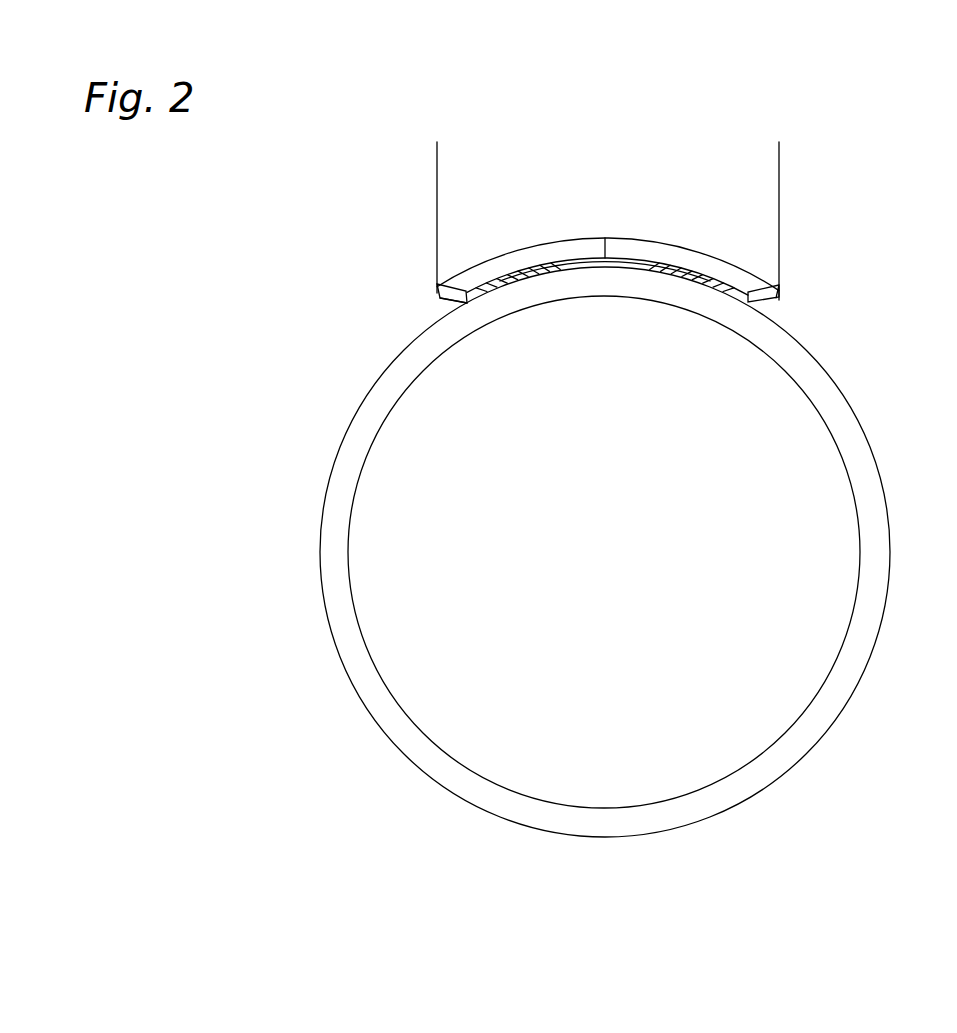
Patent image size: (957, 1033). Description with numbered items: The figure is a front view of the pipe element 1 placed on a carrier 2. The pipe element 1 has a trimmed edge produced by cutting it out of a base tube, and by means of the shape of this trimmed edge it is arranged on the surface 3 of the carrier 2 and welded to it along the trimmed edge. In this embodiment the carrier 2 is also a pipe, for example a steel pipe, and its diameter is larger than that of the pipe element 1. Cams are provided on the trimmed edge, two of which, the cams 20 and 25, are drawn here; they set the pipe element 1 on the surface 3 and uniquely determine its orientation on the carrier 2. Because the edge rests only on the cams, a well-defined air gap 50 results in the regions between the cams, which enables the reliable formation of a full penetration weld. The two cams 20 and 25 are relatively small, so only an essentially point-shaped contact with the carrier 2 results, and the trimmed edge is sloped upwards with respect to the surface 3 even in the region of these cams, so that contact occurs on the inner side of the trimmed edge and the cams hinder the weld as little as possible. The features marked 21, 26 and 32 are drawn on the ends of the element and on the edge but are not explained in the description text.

The pipe element 1 is at (768, 190).
The carrier 2 is at (628, 552).
The surface of the carrier 3 is at (843, 403).
The cam 20 is at (592, 289).
The right end lug of clamp 21 is at (752, 308).
The cam 25 is at (440, 299).
The lower edge of left lug 26 is at (457, 311).
The dividing line of clamp 32 is at (640, 250).
The air gap 50 is at (626, 268).